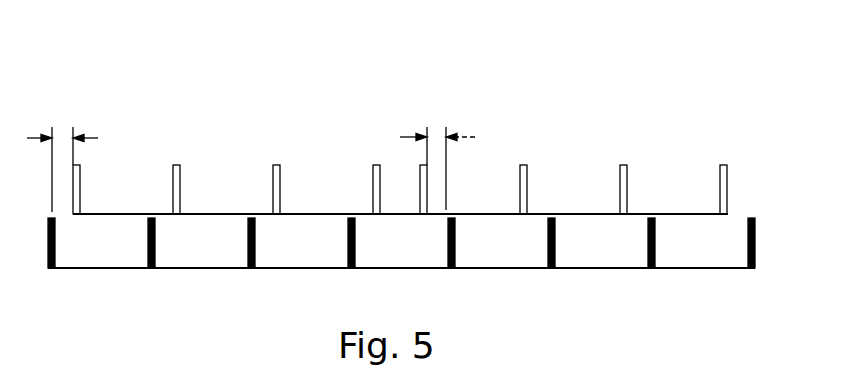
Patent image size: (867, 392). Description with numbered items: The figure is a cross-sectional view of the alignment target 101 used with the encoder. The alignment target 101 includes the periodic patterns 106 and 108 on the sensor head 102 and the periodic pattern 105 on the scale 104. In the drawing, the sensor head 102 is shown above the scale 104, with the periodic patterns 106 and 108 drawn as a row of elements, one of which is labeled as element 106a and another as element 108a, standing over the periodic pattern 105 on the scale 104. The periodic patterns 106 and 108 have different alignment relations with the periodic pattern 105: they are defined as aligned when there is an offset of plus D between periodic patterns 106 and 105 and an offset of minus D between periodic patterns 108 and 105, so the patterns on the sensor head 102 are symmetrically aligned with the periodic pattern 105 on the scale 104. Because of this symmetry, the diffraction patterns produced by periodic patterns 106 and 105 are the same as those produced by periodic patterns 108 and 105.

The alignment target 101 is at (127, 41).
The sensor head 102 is at (98, 213).
The scale 104 is at (62, 265).
The periodic pattern 105 is at (182, 283).
The periodic pattern 106 is at (264, 96).
The pin of first set 106a is at (303, 141).
The periodic pattern 108 is at (590, 91).
The pin of second set 108a is at (700, 140).